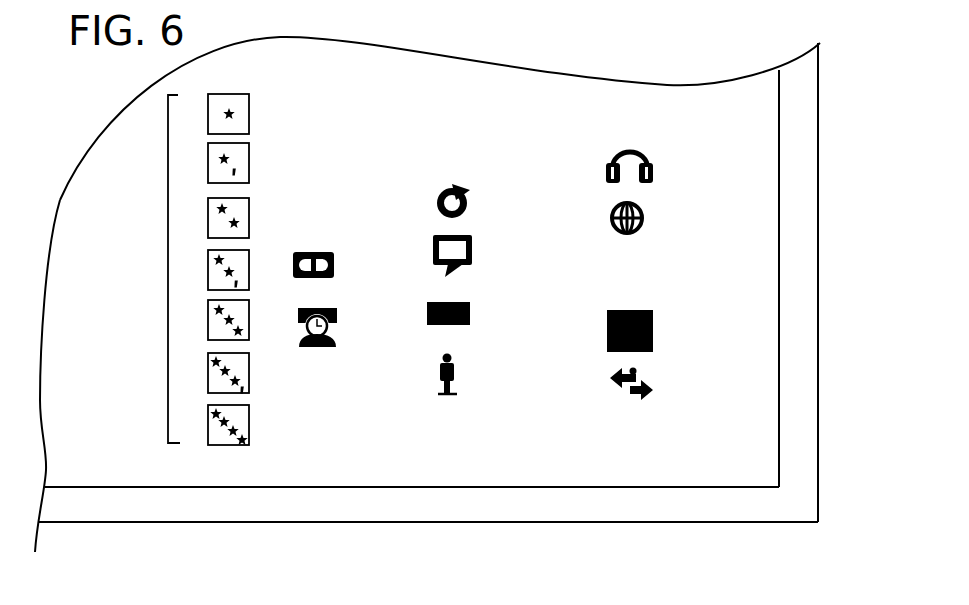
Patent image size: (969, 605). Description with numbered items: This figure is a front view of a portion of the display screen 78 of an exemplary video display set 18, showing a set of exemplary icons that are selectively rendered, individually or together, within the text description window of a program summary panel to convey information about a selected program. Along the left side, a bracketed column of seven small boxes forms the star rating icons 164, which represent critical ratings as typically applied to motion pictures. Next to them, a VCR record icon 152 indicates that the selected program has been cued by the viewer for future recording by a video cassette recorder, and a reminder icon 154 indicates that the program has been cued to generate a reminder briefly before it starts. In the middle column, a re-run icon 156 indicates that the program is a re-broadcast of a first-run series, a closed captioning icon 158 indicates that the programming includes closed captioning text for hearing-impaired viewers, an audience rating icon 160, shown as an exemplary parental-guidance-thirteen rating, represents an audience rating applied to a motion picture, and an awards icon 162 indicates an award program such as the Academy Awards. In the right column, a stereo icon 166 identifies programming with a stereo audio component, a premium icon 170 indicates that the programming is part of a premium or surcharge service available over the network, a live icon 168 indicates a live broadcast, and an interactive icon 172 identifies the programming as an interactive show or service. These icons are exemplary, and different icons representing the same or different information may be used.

The video display set 18 is at (803, 303).
The display screen 78 is at (417, 78).
The VCR record icon 152 is at (313, 252).
The reminder icon 154 is at (313, 347).
The re-run icon 156 is at (443, 187).
The closed captioning icon 158 is at (475, 247).
The audience rating icon 160 is at (470, 310).
The awards icon 162 is at (455, 370).
The star rating icons 164 is at (168, 298).
The stereo icon 166 is at (627, 152).
The live icon 168 is at (653, 325).
The premium icon 170 is at (645, 218).
The interactive icon 172 is at (638, 377).